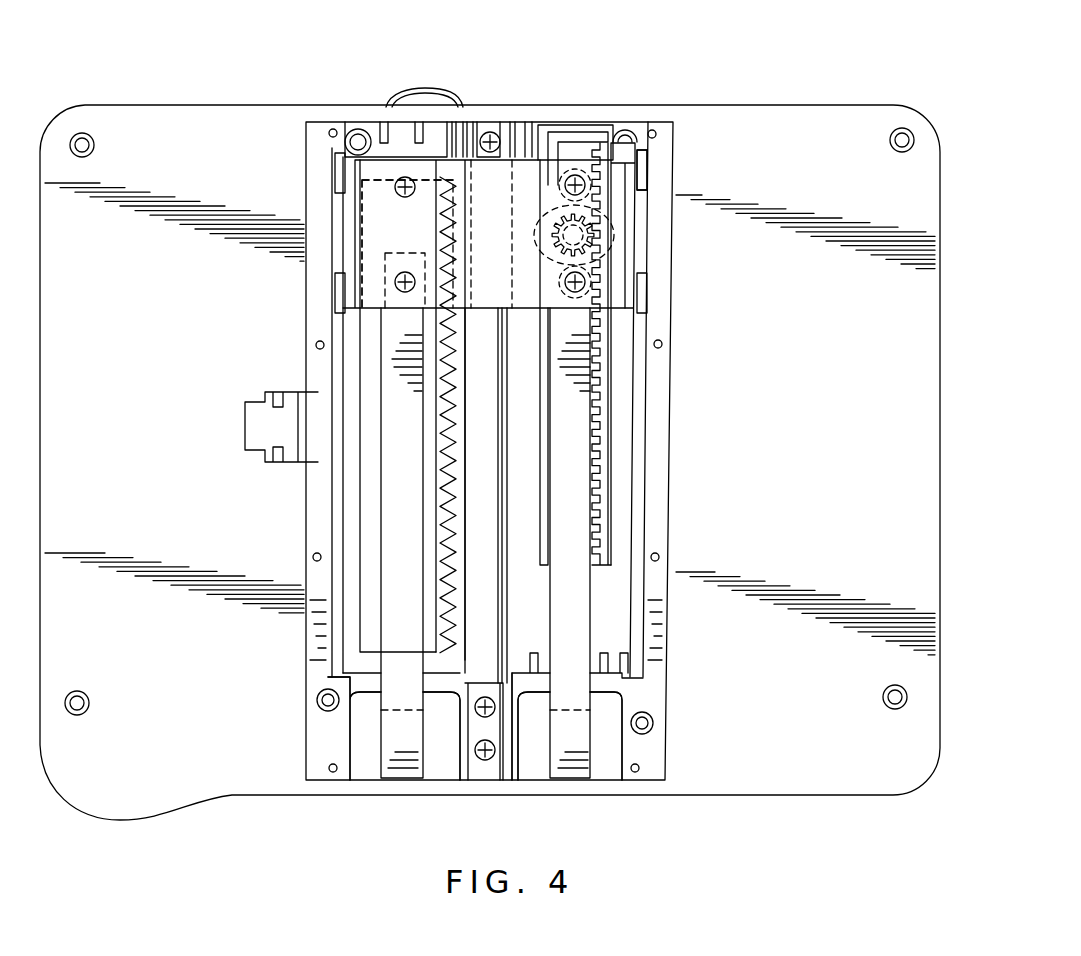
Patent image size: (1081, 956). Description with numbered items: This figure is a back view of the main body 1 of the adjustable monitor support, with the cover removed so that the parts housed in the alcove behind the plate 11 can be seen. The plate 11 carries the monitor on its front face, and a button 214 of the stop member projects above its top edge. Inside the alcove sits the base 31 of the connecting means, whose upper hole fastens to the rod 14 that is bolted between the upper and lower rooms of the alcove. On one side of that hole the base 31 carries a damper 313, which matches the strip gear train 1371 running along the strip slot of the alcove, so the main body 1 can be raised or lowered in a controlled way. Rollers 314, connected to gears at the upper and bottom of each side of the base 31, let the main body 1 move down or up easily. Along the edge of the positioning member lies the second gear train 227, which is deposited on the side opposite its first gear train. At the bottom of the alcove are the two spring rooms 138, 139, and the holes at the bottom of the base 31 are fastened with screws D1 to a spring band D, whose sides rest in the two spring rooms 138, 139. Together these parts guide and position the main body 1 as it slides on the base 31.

The main body 1 is at (958, 82).
The plate 11 is at (806, 128).
The rod 14 is at (486, 616).
The base 31 is at (522, 175).
The spring room 138 is at (362, 752).
The spring room 139 is at (610, 748).
The button 214 is at (432, 96).
The second gear train 227 is at (462, 514).
The damper 313 is at (616, 232).
The roller 314 is at (646, 165).
The strip gear train 1371 is at (612, 420).
The spring band D is at (398, 528).
The screw D1 is at (394, 264).